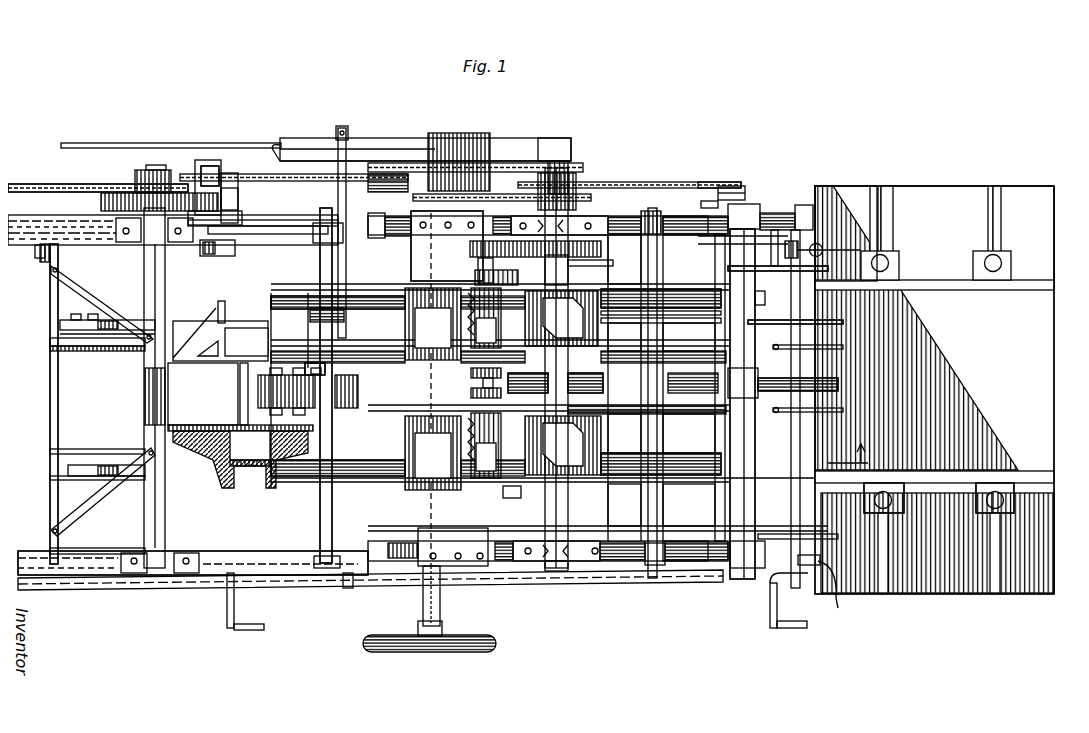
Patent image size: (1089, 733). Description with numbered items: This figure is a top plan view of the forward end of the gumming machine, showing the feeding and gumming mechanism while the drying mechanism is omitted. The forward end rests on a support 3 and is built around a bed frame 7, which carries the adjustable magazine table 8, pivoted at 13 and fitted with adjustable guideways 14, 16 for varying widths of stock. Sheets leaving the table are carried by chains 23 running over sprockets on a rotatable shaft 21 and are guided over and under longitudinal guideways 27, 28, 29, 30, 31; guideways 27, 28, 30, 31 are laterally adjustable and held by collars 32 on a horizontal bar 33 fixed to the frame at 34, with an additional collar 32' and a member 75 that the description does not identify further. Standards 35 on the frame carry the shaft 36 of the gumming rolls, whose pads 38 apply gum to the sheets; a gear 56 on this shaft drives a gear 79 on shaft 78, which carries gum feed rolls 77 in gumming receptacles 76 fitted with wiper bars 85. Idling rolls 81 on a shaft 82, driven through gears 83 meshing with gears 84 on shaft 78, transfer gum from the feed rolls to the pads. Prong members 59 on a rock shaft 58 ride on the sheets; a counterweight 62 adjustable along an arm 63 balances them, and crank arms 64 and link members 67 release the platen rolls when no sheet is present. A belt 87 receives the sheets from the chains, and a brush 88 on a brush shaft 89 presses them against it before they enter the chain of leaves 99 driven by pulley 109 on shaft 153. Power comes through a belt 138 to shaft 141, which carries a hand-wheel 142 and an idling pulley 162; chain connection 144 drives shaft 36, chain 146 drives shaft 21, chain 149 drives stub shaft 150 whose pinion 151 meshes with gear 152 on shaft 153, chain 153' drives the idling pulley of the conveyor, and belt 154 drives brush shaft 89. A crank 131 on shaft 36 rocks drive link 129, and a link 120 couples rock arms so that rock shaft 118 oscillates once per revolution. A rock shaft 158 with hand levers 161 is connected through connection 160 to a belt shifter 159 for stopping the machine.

The drive link 129 is at (215, 135).
The belt shifter 159 is at (334, 118).
The belt 138 is at (385, 137).
The idling pulley 162 is at (468, 125).
The eccentric or crank 131 is at (558, 130).
The chain 153' is at (98, 173).
The gear 152 is at (104, 185).
The pinion 151 is at (222, 180).
The stub shaft 150 is at (230, 193).
The link 120 is at (286, 212).
The belt 154 is at (262, 226).
The chain 149 is at (505, 162).
The chain connection 144 is at (600, 174).
The chain 146 is at (700, 174).
The fixing point 34 is at (645, 188).
The bed frame 7 is at (680, 590).
The counterweight 62 is at (795, 236).
The arm 63 is at (815, 240).
The adjustable guideway 14 is at (930, 272).
The crank arm 64 is at (820, 261).
The gear 79 is at (470, 238).
The shaft 78 is at (468, 258).
The gear 56 is at (593, 240).
The horizontal bar 33 is at (640, 256).
The collar 32 is at (645, 380).
The guide 32' is at (624, 429).
The longitudinal guideway 31 is at (372, 288).
The link member 67 is at (750, 262).
The leaves 99 is at (210, 296).
The brush shaft 89 is at (312, 262).
The brush 88 is at (300, 355).
The gumming receptacle 76 is at (433, 389).
The wiper bar 85 is at (455, 325).
The gum feed roll 77 is at (484, 383).
The idling roll 81 is at (490, 457).
The gumming pad 38 is at (563, 383).
The shaft 36 is at (560, 485).
The longitudinal guideway 30 is at (689, 337).
The rock shaft 58 is at (830, 313).
The prong member 59 is at (836, 339).
The driven pulley 109 is at (136, 384).
The gear 84 is at (463, 364).
The gear 83 is at (528, 383).
The chain 23 is at (600, 383).
The longitudinal guideway 29 is at (693, 383).
The bar 75 is at (815, 373).
The belt 87 is at (285, 402).
The longitudinal guideway 28 is at (689, 433).
The magazine table 8 is at (934, 390).
The supporting member 3 is at (14, 468).
The longitudinal guideway 27 is at (376, 469).
The shaft 82 is at (513, 484).
The rotatable shaft 21 is at (715, 504).
The adjustable guideway 16 is at (940, 475).
The shaft 153 is at (97, 404).
The rock shaft 118 is at (312, 508).
The rock shaft 158 is at (118, 582).
The hand lever 161 is at (240, 618).
The connection 160 is at (340, 580).
The shaft 141 is at (415, 596).
The hand-wheel 142 is at (380, 644).
The standard 35 is at (545, 565).
The pivot 13 is at (830, 600).